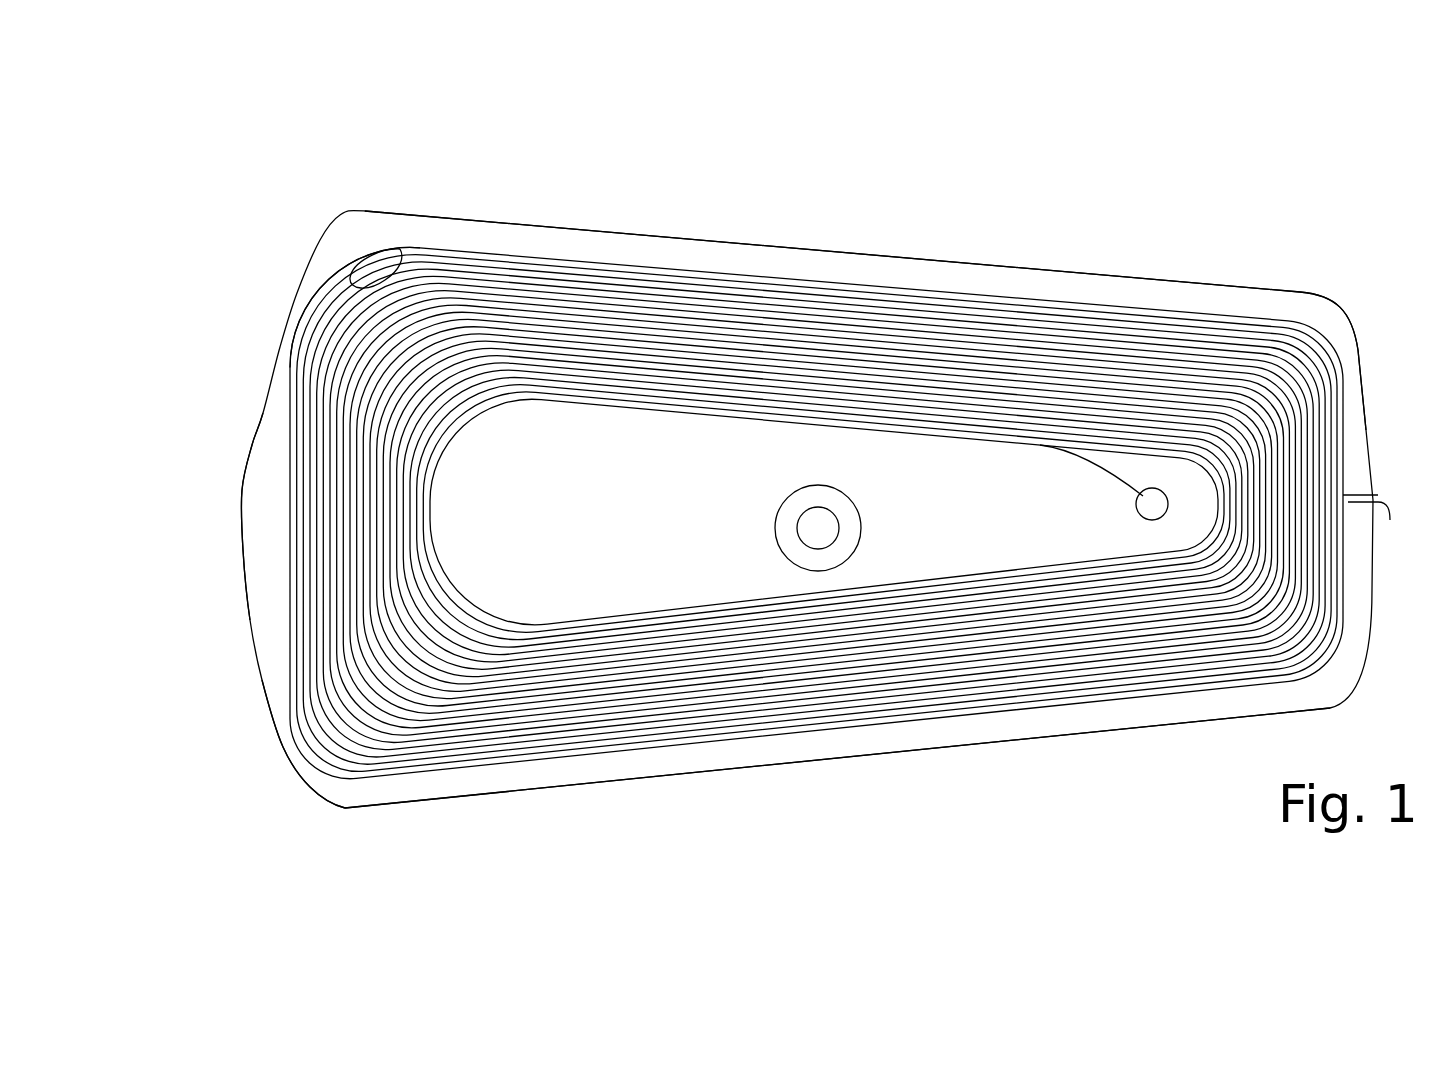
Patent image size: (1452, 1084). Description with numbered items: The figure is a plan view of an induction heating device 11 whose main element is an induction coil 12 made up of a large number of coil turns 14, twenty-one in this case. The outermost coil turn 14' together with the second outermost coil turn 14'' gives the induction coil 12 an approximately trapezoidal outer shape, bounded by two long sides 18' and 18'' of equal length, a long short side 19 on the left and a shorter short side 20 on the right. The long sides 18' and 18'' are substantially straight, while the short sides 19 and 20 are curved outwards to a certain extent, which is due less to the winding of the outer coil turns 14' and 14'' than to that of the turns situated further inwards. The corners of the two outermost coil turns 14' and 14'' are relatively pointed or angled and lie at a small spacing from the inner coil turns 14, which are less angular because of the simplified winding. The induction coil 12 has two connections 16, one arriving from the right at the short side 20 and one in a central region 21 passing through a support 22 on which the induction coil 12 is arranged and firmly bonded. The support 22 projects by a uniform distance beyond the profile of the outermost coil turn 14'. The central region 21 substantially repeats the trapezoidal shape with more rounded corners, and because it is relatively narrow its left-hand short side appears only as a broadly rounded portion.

The induction heating device 11 is at (1127, 195).
The induction coil 12 is at (692, 248).
The coil turns 14 is at (757, 512).
The outermost coil turn 14' is at (316, 279).
The second outermost coil turn 14'' is at (415, 227).
The connections 16 is at (1138, 507).
The long side 18' is at (832, 191).
The long side 18'' is at (837, 823).
The long short side 19 is at (255, 492).
The short side 20 is at (1352, 377).
The central region 21 is at (646, 526).
The support 22 is at (300, 733).